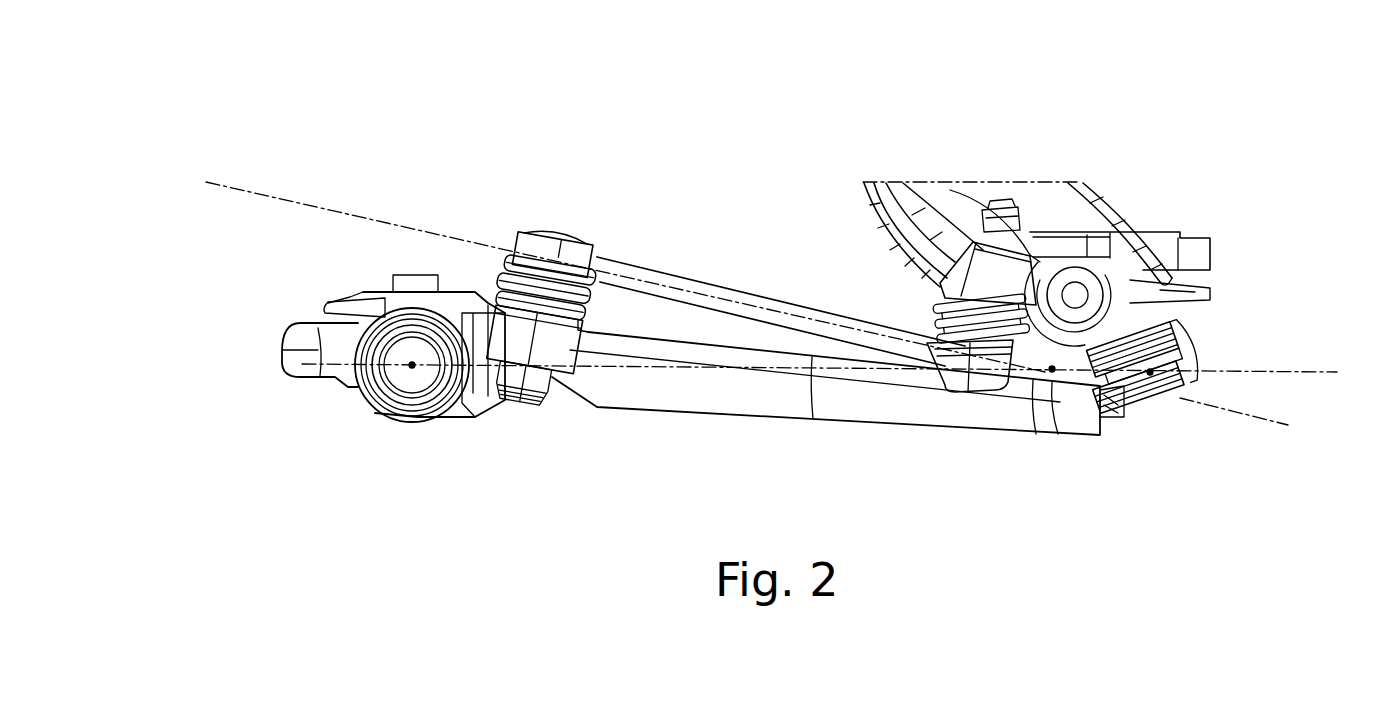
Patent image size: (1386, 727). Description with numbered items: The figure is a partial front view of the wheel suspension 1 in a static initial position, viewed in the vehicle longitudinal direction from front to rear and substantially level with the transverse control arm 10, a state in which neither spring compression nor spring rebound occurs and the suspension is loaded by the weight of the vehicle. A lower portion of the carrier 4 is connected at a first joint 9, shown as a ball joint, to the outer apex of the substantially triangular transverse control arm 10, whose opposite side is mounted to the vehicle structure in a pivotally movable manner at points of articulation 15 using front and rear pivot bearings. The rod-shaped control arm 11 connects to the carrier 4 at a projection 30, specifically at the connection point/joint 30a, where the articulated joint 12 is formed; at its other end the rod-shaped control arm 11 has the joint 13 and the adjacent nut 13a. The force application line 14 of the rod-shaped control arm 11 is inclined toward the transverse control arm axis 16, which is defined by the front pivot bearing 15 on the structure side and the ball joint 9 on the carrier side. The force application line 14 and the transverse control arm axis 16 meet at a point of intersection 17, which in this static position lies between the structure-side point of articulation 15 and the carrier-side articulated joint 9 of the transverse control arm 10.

The wheel suspension 1 is at (415, 108).
The carrier 4 is at (1073, 213).
The first joint 9 is at (1160, 362).
The transverse control arm 10 is at (740, 388).
The rod-shaped control arm 11 is at (716, 295).
The articulated joint 12 is at (931, 310).
The joint 13 is at (549, 229).
The nut 13a is at (557, 383).
The force application line 14 is at (219, 183).
The pivot points 15 is at (391, 405).
The transverse control arm axis 16 is at (687, 368).
The point of intersection 17 is at (1052, 433).
The projection 30 is at (949, 268).
The connection point/joint 30a is at (1041, 282).